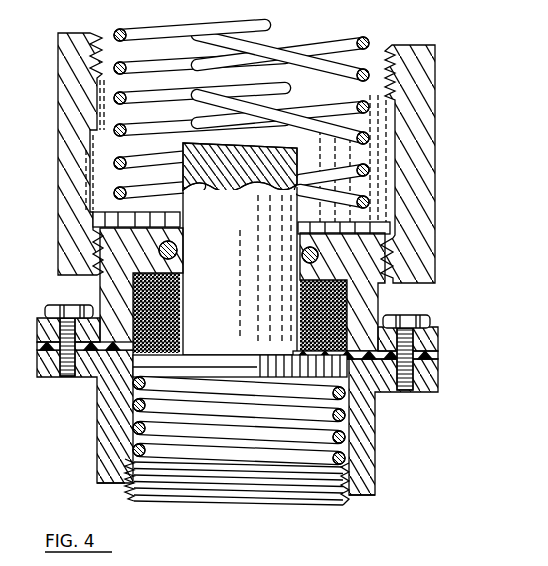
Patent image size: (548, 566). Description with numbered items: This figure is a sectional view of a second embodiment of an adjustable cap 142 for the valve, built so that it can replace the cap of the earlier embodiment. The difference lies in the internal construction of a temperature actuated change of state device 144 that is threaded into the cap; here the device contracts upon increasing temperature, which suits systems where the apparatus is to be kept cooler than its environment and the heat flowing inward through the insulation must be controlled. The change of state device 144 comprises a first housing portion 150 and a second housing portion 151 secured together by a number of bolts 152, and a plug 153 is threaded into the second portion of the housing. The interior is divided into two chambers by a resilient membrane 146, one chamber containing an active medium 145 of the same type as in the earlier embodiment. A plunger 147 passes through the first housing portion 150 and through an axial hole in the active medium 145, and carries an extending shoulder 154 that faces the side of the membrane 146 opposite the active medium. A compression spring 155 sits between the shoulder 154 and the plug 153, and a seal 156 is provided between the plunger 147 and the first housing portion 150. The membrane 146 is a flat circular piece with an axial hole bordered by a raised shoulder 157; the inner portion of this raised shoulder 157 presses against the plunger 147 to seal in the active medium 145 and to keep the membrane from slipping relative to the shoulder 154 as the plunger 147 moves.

The adjustable cap 142 is at (403, 178).
The temperature actuated change of state device 144 is at (445, 333).
The active medium 145 is at (181, 303).
The resilient membrane 146 is at (431, 360).
The plunger 147 is at (252, 320).
The first housing portion 150 is at (365, 298).
The second housing portion 151 is at (357, 412).
The bolts 152 is at (68, 304).
The plug 153 is at (245, 480).
The shoulder 154 is at (150, 366).
The compression spring 155 is at (370, 435).
The seal 156 is at (318, 257).
The raised shoulder 157 is at (296, 355).